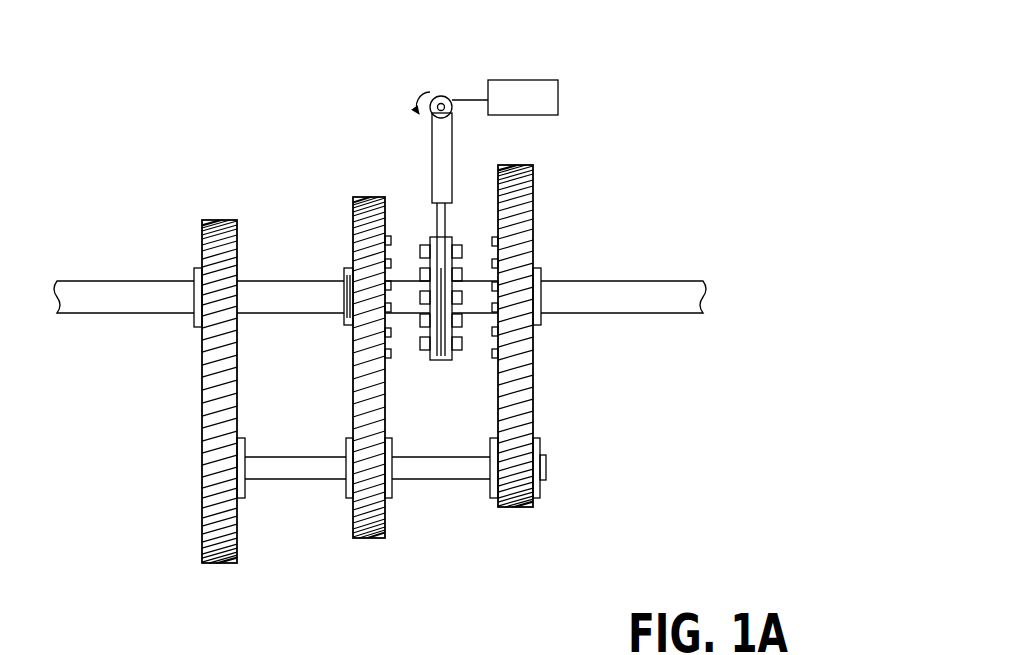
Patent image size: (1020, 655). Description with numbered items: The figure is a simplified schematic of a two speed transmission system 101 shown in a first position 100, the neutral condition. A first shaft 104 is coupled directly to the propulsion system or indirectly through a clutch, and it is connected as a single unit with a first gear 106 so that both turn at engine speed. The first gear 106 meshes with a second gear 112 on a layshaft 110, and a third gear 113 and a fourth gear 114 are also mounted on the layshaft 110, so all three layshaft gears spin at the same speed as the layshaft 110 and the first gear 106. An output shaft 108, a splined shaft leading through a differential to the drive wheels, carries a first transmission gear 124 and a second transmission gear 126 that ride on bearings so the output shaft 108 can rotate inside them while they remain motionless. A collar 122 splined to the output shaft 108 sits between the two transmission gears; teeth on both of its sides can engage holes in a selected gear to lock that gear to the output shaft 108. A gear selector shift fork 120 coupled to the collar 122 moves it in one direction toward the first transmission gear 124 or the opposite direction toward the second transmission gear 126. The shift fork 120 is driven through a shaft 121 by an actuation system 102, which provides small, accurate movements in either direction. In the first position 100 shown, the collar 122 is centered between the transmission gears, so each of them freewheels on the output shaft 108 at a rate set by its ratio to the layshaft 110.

The first position 100 is at (648, 76).
The two speed transmission system 101 is at (327, 116).
The actuation system 102 is at (507, 108).
The first shaft 104 is at (135, 312).
The first gear 106 is at (226, 222).
The output shaft 108 is at (657, 303).
The layshaft 110 is at (300, 480).
The second gear 112 is at (210, 560).
The third gear 113 is at (370, 540).
The fourth gear 114 is at (525, 492).
The shift fork 120 is at (436, 145).
The shaft 121 is at (450, 110).
The collar 122 is at (450, 362).
The first transmission gear 124 is at (362, 205).
The second transmission gear 126 is at (515, 225).